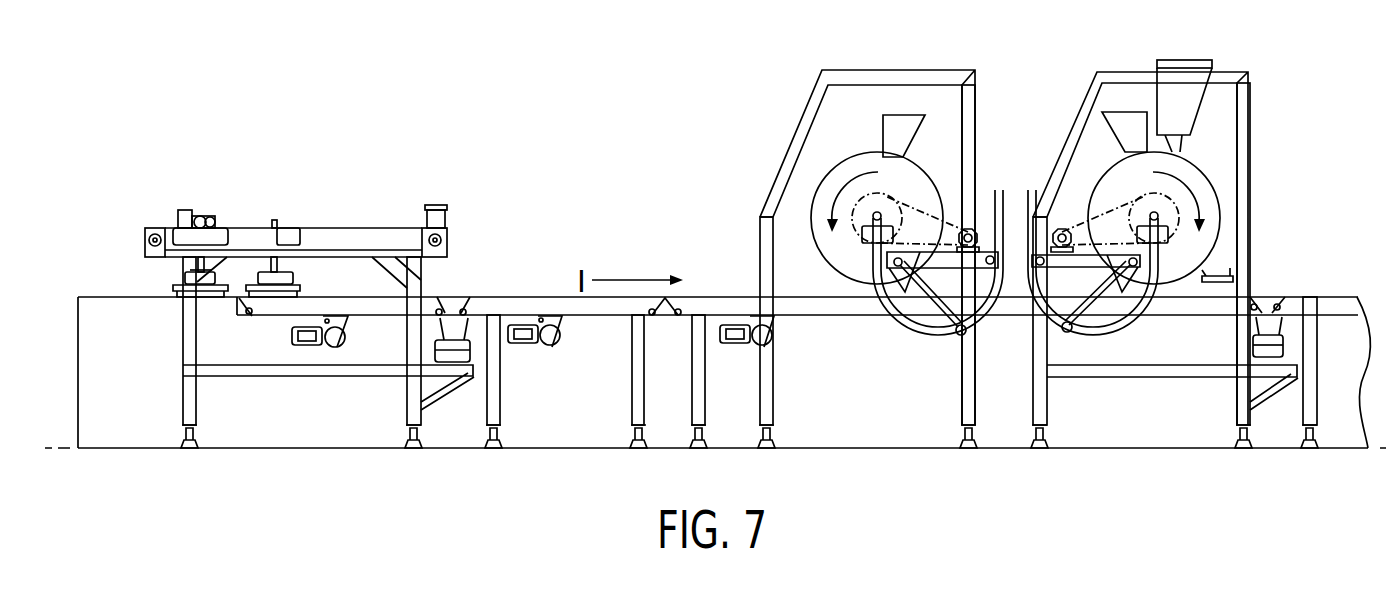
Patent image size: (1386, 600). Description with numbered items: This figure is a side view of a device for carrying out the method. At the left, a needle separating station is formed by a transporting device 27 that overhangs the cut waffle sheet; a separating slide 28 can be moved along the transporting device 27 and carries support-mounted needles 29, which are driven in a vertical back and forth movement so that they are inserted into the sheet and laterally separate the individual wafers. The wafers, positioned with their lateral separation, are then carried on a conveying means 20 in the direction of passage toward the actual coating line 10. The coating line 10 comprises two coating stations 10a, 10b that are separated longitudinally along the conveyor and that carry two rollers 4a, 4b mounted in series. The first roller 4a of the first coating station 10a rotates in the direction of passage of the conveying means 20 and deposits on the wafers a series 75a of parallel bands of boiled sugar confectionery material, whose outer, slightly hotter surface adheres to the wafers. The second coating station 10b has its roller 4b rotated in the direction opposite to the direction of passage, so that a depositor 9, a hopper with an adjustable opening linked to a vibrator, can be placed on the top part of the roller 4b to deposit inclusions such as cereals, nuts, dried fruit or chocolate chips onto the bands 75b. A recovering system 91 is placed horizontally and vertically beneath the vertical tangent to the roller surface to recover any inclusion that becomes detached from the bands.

The coating line 10 is at (1055, 56).
The first coating station 10a is at (790, 112).
The second coating station 10b is at (1070, 101).
The first roller 4a is at (937, 177).
The second roller 4b is at (1210, 175).
The depositor 9 is at (1200, 108).
The conveying means 20 is at (519, 285).
The transporting device 27 is at (246, 220).
The separating slide 28 is at (292, 256).
The needles 29 is at (317, 272).
The series of parallel bands 75a is at (868, 290).
The series of parallel bands 75b is at (1185, 243).
The recovering system 91 is at (1233, 283).